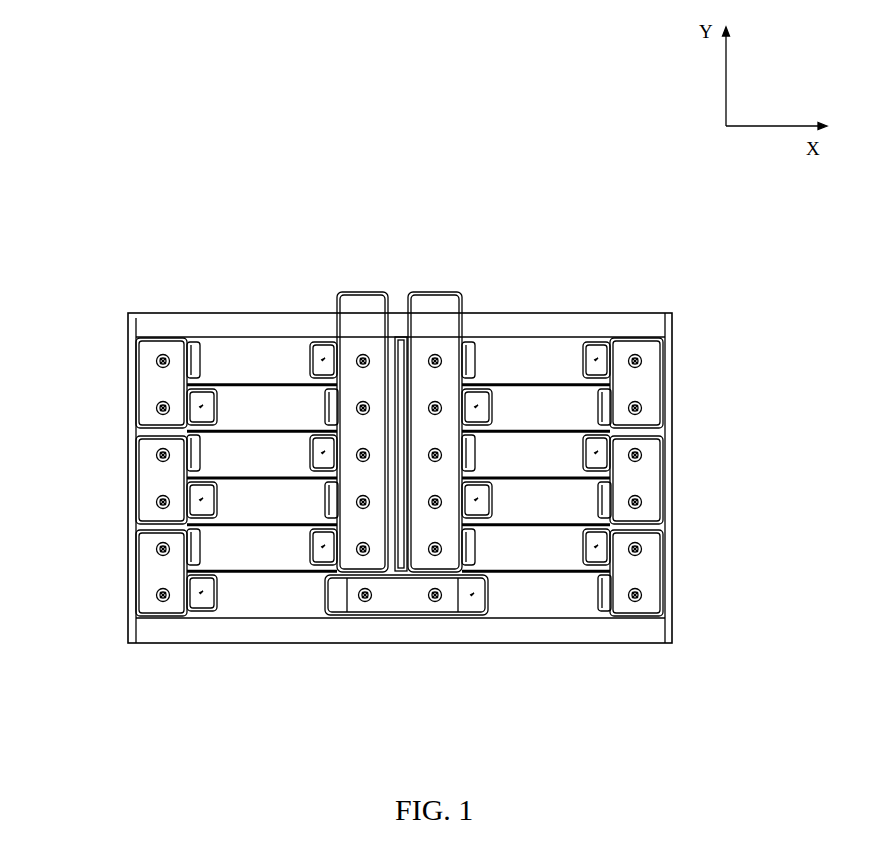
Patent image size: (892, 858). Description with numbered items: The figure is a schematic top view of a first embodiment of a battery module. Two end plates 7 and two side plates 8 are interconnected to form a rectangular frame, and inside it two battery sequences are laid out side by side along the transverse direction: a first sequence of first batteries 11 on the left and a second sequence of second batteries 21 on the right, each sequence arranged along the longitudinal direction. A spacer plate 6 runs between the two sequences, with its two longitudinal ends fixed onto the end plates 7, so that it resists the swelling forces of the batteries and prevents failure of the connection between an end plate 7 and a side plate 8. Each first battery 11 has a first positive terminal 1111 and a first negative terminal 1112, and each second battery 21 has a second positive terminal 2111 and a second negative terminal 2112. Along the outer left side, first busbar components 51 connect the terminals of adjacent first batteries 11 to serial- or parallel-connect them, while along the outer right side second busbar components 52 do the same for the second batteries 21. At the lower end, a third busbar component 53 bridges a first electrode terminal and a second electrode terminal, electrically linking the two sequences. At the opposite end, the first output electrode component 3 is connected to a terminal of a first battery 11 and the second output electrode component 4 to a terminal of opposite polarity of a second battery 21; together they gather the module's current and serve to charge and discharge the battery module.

The first positive terminal 1111 is at (190, 345).
The first negative terminal 1112 is at (312, 352).
The second positive terminal 2111 is at (472, 345).
The second negative terminal 2112 is at (597, 347).
The first output electrode component 3 is at (360, 305).
The second output electrode component 4 is at (432, 305).
The spacer plate 6 is at (402, 336).
The end plates 7 is at (223, 322).
The side plates 8 is at (128, 615).
The first batteries 11 is at (272, 357).
The second batteries 21 is at (520, 357).
The first busbar component 51 is at (147, 386).
The second busbar component 52 is at (662, 395).
The third busbar component 53 is at (397, 604).